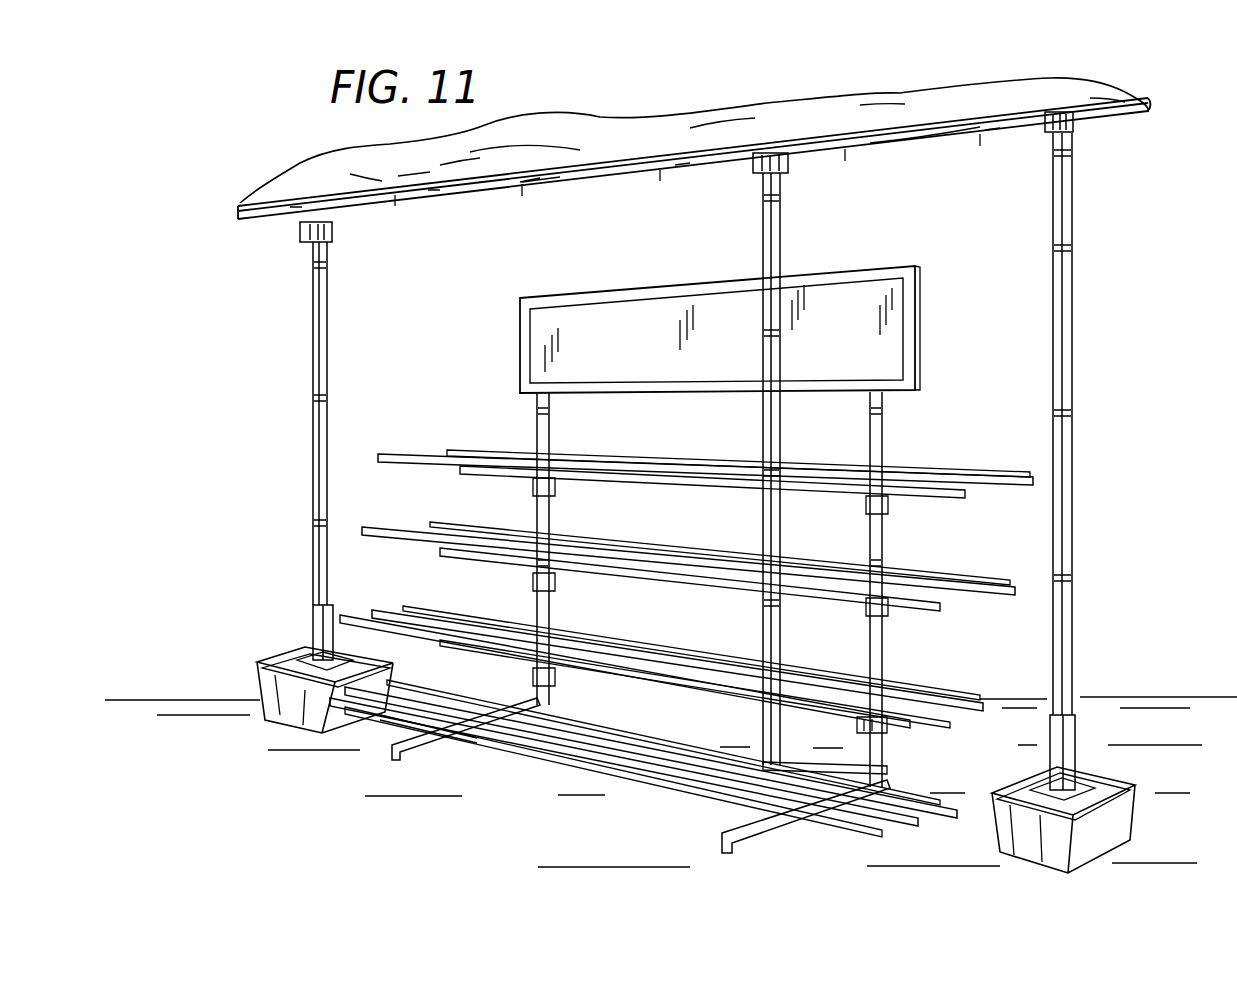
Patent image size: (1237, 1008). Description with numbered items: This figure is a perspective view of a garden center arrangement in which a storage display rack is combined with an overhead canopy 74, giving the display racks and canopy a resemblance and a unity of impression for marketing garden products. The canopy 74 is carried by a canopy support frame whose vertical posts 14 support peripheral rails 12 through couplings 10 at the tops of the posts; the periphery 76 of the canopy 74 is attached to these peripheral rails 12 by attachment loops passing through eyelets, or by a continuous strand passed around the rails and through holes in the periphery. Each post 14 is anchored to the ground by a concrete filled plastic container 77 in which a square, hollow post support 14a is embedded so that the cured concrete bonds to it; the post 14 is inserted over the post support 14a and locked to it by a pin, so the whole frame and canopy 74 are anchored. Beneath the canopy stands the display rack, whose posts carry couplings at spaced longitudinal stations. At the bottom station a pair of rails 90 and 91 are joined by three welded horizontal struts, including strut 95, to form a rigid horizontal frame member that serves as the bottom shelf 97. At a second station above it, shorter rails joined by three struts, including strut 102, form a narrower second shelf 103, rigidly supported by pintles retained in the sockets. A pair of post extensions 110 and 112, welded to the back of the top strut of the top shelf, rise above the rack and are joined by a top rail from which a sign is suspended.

The coupling 10 is at (300, 242).
The rail 12 is at (262, 212).
The post 14 is at (313, 395).
The post support 14a is at (313, 620).
The canopy 74 is at (400, 172).
The periphery 76 is at (524, 180).
The container 77 is at (275, 705).
The rail 90 is at (505, 700).
The rail 91 is at (735, 812).
The horizontal strut 95 is at (650, 782).
The bottom shelf 97 is at (545, 766).
The strut 102 is at (660, 696).
The second shelf 103 is at (712, 688).
The post extension 110 is at (537, 418).
The post extension 112 is at (882, 438).